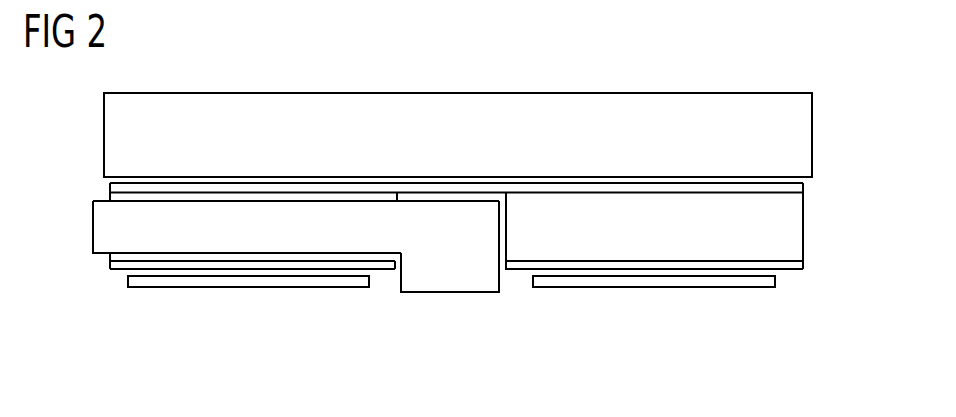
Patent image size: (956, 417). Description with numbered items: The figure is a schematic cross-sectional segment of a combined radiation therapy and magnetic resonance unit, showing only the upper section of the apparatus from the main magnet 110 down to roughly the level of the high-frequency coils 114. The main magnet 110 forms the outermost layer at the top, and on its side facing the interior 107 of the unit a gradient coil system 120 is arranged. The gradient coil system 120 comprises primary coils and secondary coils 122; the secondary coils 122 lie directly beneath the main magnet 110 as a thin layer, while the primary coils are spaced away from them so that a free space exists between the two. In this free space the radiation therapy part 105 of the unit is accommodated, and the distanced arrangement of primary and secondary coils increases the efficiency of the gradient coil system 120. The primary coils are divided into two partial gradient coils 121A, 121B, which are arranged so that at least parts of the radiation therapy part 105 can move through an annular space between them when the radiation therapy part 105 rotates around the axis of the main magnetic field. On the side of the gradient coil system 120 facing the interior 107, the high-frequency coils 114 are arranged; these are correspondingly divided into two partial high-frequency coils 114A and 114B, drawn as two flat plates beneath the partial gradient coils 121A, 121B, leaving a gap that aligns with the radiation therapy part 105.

The interior 107 is at (803, 320).
The main magnet 110 is at (104, 136).
The gradient coil system 120 is at (97, 187).
The secondary coils 122 is at (573, 188).
The first partial gradient coil 121A is at (383, 265).
The second partial gradient coil 121B is at (638, 263).
The radiation therapy part 105 is at (500, 283).
The high-frequency coils 114 is at (146, 305).
The first partial high-frequency coil 114A is at (193, 289).
The second partial high-frequency coil 114B is at (632, 289).